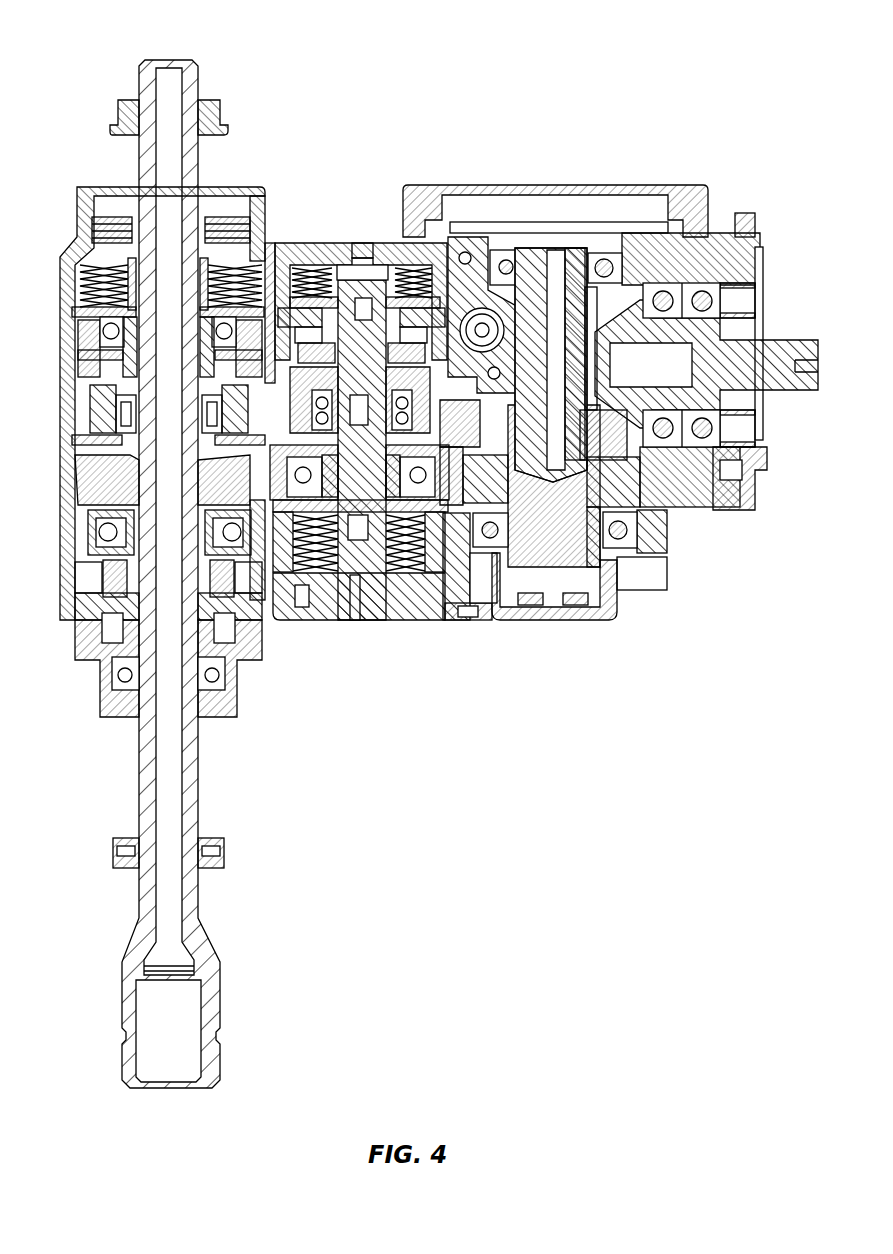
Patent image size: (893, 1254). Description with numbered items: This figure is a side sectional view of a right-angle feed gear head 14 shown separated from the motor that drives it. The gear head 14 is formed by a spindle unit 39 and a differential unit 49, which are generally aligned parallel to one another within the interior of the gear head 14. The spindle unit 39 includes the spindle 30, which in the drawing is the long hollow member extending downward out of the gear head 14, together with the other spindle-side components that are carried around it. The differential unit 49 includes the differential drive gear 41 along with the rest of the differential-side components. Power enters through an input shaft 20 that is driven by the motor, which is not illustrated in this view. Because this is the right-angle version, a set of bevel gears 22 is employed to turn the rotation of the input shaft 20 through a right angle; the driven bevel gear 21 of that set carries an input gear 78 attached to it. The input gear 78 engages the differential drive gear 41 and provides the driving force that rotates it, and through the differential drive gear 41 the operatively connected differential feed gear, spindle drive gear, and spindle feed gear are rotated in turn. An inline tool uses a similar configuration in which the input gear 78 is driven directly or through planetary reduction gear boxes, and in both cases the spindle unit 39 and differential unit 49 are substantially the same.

The gear head 14 is at (318, 130).
The input shaft 20 is at (763, 357).
The driven bevel gear 21 is at (593, 540).
The bevel gears 22 is at (726, 473).
The spindle 30 is at (148, 905).
The spindle unit 39 is at (62, 178).
The differential drive gear 41 is at (448, 483).
The differential unit 49 is at (392, 655).
The input gear 78 is at (492, 483).